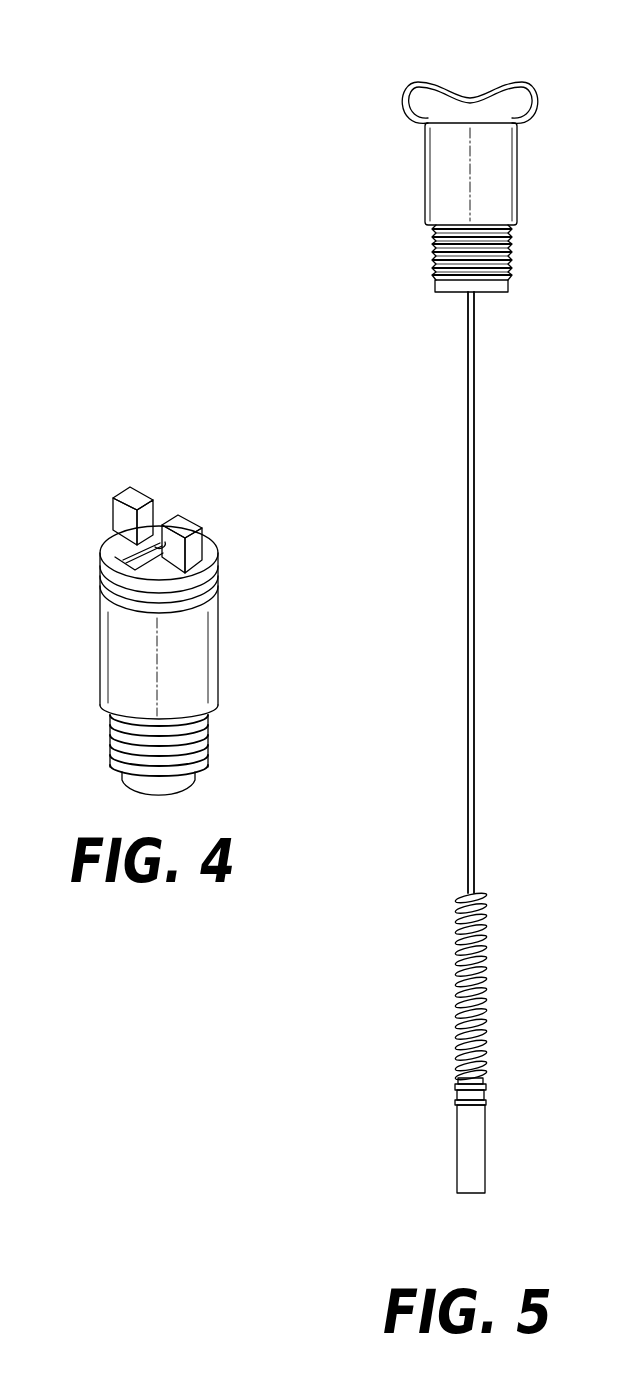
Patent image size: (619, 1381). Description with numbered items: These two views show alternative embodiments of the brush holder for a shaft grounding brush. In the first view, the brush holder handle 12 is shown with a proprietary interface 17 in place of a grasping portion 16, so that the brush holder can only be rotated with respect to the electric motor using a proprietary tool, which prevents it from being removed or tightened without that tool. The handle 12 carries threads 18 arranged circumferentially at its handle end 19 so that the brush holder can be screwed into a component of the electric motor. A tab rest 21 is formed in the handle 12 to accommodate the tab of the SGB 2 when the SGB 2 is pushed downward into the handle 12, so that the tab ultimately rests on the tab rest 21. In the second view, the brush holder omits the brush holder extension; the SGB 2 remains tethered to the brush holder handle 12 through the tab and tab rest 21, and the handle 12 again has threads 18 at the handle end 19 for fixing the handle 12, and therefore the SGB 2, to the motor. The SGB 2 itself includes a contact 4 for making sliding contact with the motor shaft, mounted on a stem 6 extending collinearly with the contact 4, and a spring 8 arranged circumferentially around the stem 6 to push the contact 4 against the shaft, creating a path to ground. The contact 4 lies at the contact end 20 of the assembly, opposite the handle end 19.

In FIG. 5, the SGB 2 is at (464, 647).
In FIG. 5, the contact 4 is at (468, 1187).
In FIG. 5, the stem 6 is at (475, 507).
In FIG. 5, the spring 8 is at (458, 898).
In FIG. 4, the brush holder handle 12 is at (100, 632).
In FIG. 5, the brush holder handle 12 is at (517, 193).
In FIG. 5, the grasping portion 16 is at (517, 83).
In FIG. 4, the proprietary interface 17 is at (198, 548).
In FIG. 4, the threads 18 is at (110, 747).
In FIG. 5, the threads 18 is at (433, 273).
In FIG. 5, the handle end 19 is at (464, 156).
In FIG. 5, the contact end 20 is at (512, 1092).
In FIG. 4, the tab rest 21 is at (133, 558).